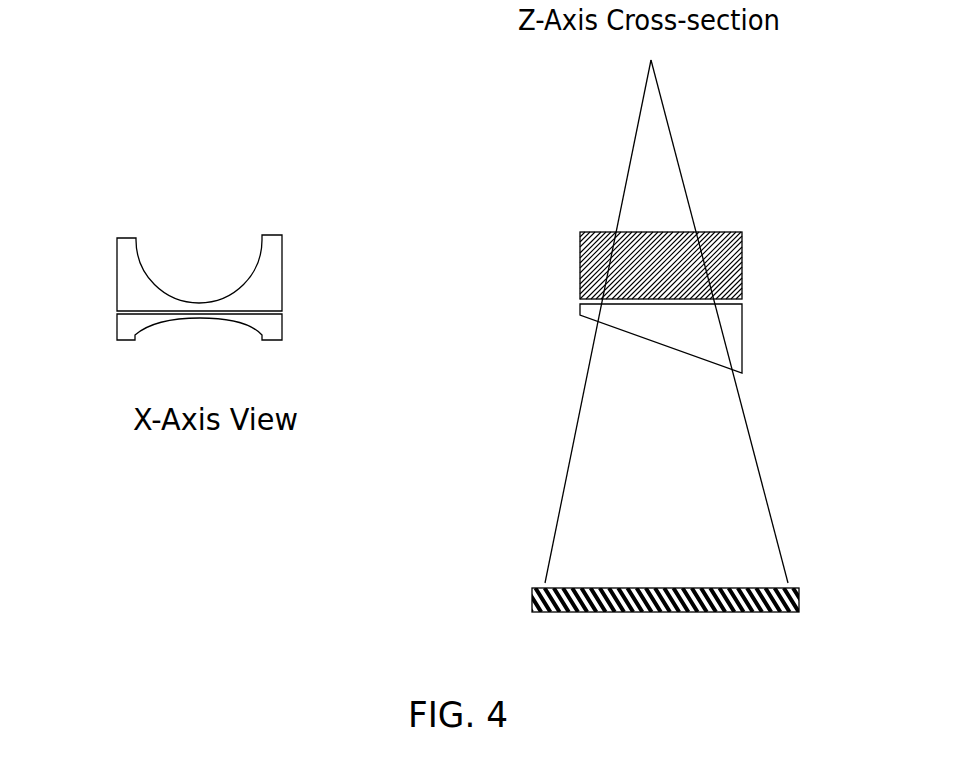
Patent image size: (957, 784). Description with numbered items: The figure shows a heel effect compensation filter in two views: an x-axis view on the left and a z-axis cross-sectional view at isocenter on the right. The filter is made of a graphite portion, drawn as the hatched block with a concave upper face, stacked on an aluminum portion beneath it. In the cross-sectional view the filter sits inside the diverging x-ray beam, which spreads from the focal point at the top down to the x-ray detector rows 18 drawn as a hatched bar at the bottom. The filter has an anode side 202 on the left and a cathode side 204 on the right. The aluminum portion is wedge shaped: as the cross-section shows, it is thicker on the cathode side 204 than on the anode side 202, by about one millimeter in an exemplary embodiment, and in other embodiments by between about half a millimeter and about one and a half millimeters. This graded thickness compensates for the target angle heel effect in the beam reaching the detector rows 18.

The x-ray detector rows 18 is at (710, 620).
The anode side 202 is at (586, 321).
The cathode side 204 is at (725, 321).